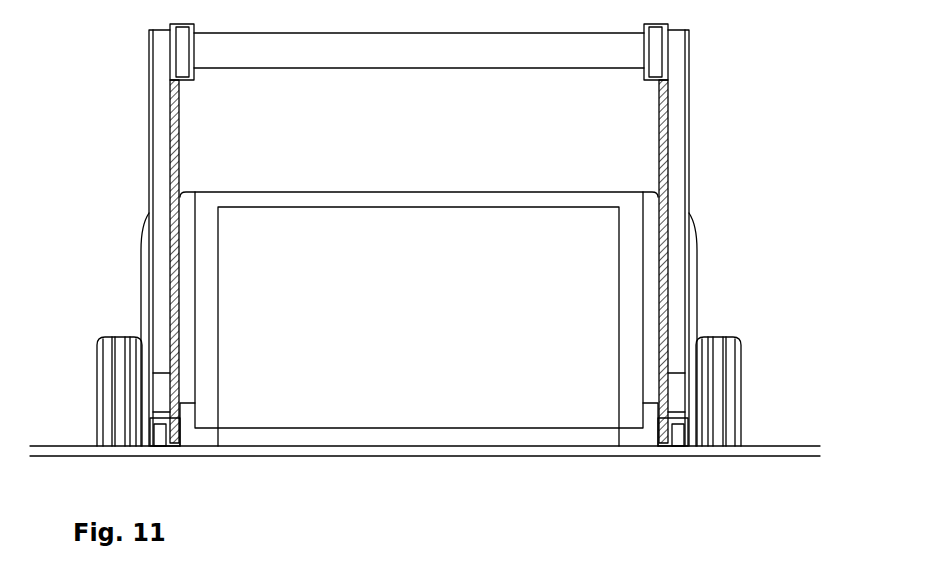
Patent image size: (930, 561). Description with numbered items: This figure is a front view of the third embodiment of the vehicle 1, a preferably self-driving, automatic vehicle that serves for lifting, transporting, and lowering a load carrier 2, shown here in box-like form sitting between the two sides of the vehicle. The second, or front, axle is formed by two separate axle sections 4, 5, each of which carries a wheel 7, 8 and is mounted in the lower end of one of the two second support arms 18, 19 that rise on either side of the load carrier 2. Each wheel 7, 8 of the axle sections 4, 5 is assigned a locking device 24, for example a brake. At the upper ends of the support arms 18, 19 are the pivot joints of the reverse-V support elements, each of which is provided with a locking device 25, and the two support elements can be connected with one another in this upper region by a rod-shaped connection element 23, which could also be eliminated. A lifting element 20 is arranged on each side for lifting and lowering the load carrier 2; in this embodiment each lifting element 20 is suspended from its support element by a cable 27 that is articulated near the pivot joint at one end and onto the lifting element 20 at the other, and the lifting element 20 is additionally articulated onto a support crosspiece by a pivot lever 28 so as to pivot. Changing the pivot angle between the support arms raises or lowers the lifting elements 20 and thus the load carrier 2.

The vehicle 1 is at (745, 53).
The load carrier 2 is at (398, 220).
The axle section 4 is at (97, 397).
The axle section 5 is at (741, 390).
The wheel 7 is at (92, 367).
The wheel 8 is at (740, 370).
The second support arm 18 is at (150, 156).
The second support arm 19 is at (690, 157).
The lifting element 20 is at (178, 447).
The connection element 23 is at (358, 60).
The locking device 24 is at (137, 447).
The locking device 25 is at (197, 80).
The cable 27 is at (182, 190).
The pivot lever 28 is at (176, 398).